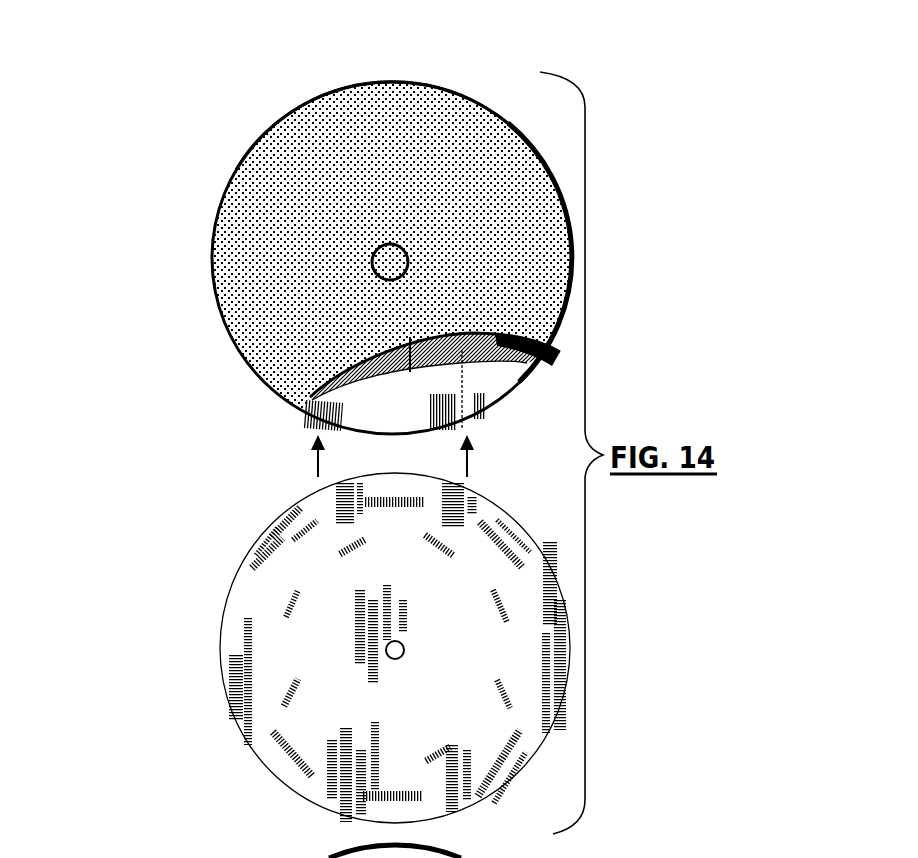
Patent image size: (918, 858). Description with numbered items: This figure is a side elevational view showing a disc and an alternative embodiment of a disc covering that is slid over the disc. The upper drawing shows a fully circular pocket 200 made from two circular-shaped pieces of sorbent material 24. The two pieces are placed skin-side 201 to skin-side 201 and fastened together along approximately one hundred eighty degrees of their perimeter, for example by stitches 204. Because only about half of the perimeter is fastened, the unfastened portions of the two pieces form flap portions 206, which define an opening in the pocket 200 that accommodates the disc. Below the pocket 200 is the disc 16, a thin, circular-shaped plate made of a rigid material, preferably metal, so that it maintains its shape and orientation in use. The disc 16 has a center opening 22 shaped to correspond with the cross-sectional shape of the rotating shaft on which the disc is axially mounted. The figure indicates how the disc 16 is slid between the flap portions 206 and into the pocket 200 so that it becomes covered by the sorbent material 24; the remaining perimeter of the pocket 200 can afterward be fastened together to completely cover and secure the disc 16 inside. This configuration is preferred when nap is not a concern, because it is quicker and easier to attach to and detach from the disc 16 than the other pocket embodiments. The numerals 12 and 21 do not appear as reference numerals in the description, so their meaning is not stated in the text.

The hatched segment on backing plate 12 is at (290, 686).
The disc 16 is at (222, 612).
The cut face line 21 is at (420, 387).
The center opening 22 is at (395, 660).
The sorbent material 24 is at (317, 177).
The fully circular pocket 200 is at (213, 293).
The skin-side 201 is at (480, 398).
The stitches 204 is at (362, 82).
The flap portions 206 is at (330, 417).